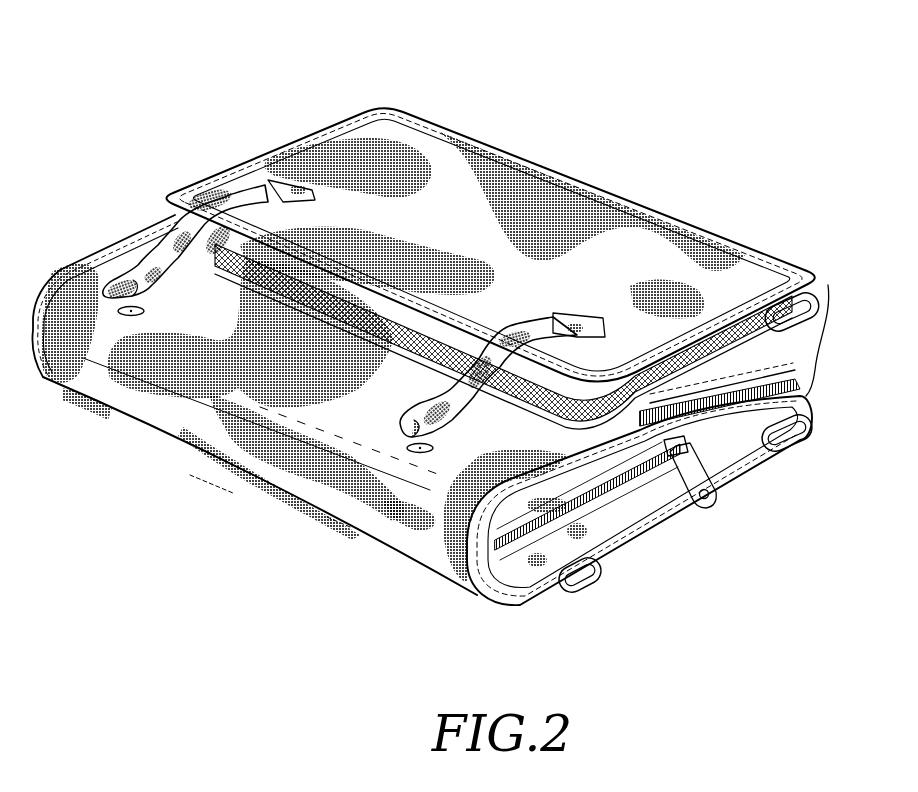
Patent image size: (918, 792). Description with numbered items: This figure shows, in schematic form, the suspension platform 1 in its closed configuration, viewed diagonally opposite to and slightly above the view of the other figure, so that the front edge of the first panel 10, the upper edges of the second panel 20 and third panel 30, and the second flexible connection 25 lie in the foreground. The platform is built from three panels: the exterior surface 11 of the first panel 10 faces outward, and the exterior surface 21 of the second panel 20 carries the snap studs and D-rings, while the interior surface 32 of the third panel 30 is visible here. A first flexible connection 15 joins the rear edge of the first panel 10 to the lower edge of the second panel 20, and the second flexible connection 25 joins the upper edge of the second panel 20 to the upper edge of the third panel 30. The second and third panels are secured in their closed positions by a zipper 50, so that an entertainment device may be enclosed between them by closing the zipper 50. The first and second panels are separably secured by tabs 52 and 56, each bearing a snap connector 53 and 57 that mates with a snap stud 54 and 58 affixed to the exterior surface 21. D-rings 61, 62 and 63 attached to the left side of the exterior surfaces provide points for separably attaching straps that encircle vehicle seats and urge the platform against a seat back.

The suspension platform 1 is at (644, 128).
The first panel 10 is at (316, 126).
The exterior surface of the first panel 11 is at (425, 190).
The first flexible connection 15 is at (694, 216).
The second panel 20 is at (573, 487).
The exterior surface of the second panel 21 is at (630, 420).
The second flexible connection 25 is at (427, 540).
The third panel 30 is at (728, 475).
The interior surface of the third panel 32 is at (800, 393).
The zipper 50 is at (700, 452).
The tab 52 is at (433, 370).
The snap connector 53 is at (445, 442).
The mating snap connector 54 is at (403, 457).
The tab 56 is at (177, 211).
The snap connector 57 is at (113, 273).
The mating snap connector 58 is at (117, 322).
The D-ring 61 is at (823, 298).
The D-ring 62 is at (592, 594).
The D-ring 63 is at (784, 458).